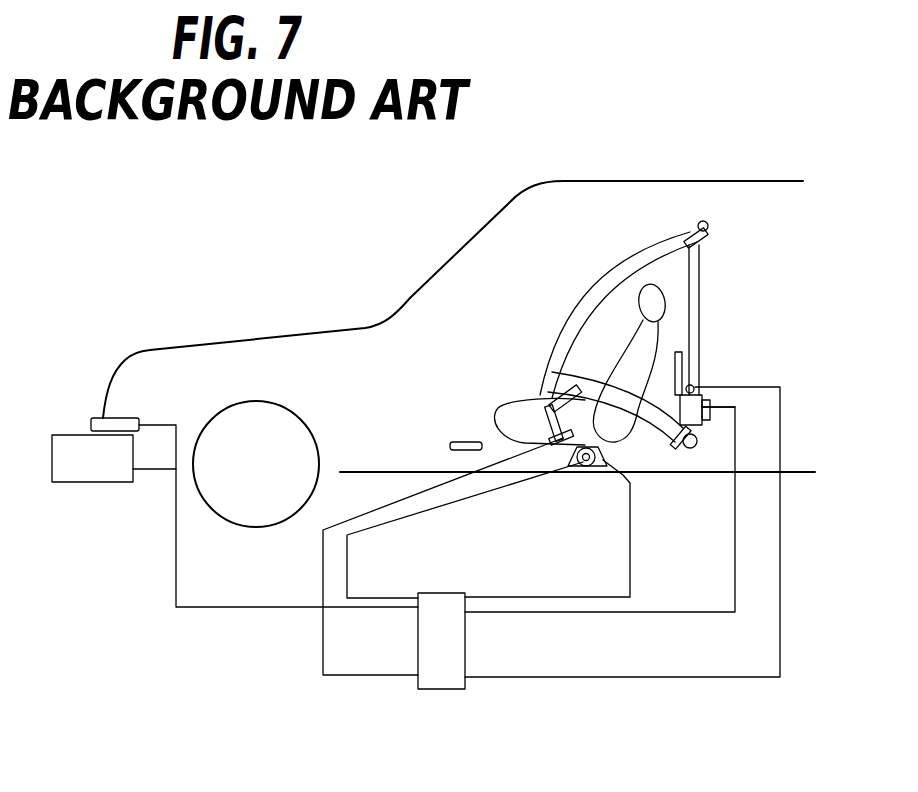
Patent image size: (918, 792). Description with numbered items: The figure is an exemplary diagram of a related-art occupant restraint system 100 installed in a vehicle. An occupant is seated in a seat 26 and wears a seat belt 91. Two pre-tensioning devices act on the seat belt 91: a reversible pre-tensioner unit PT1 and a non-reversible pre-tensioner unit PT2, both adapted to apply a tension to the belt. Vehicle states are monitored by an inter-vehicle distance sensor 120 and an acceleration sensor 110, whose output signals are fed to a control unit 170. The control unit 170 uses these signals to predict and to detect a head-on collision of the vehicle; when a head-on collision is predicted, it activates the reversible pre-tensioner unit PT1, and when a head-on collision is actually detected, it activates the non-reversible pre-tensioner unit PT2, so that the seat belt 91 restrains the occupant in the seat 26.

The occupant restraint system 100 is at (637, 300).
The seat belt 91 is at (581, 308).
The seat 26 is at (500, 403).
The reversible pre-tensioner unit PT1 is at (530, 420).
The non-reversible pre-tensioner unit PT2 is at (724, 418).
The acceleration sensor 110 is at (450, 446).
The inter-vehicle distance sensor 120 is at (108, 418).
The control unit 170 is at (450, 592).